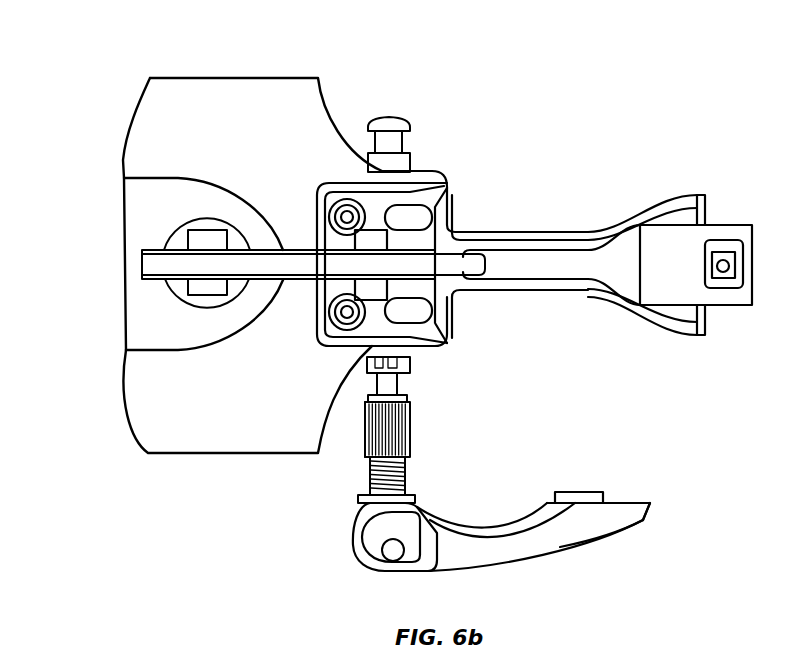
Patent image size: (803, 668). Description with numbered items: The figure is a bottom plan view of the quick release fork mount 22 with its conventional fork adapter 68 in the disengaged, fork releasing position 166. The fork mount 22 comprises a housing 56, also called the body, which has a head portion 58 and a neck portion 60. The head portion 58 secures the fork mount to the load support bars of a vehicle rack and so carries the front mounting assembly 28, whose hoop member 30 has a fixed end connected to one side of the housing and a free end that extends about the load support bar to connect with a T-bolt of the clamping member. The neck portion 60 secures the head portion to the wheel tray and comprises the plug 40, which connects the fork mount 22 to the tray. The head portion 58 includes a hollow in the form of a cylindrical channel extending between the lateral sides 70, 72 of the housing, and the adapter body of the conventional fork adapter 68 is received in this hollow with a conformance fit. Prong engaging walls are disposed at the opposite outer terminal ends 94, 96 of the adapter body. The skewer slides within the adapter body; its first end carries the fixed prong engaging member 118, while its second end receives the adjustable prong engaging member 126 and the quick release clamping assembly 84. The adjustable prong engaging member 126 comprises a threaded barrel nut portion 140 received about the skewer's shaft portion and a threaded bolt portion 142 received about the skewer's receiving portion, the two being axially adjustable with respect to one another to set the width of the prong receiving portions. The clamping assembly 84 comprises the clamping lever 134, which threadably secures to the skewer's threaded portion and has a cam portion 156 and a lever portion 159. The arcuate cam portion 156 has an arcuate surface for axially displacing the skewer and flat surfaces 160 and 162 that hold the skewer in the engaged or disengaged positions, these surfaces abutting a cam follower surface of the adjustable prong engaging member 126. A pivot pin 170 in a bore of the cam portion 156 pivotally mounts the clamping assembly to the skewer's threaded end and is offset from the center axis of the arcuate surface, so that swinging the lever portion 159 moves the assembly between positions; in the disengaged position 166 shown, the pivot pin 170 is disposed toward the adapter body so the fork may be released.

The fork mount 22 is at (258, 140).
The front mounting assembly 28 is at (476, 185).
The hoop member 30 is at (170, 263).
The plug 40 is at (665, 240).
The housing 56 is at (257, 103).
The head portion 58 is at (101, 85).
The neck portion 60 is at (601, 352).
The conventional fork adapter 68 is at (344, 482).
The lateral side 70 is at (422, 171).
The lateral side 72 is at (417, 358).
The quick release clamping assembly 84 is at (498, 580).
The outer terminal end 94 is at (412, 146).
The outer terminal end 96 is at (408, 398).
The fixed prong engaging member 118 is at (403, 110).
The adjustable prong engaging member 126 is at (404, 470).
The clamping lever 134 is at (583, 528).
The threaded barrel nut portion 140 is at (368, 438).
The threaded bolt portion 142 is at (393, 498).
The cam portion 156 is at (374, 579).
The lever portion 159 is at (652, 539).
The flat surface 160 is at (410, 497).
The flat surface 162 is at (403, 570).
The disengaged position 166 is at (622, 591).
The pivot pin 170 is at (395, 553).